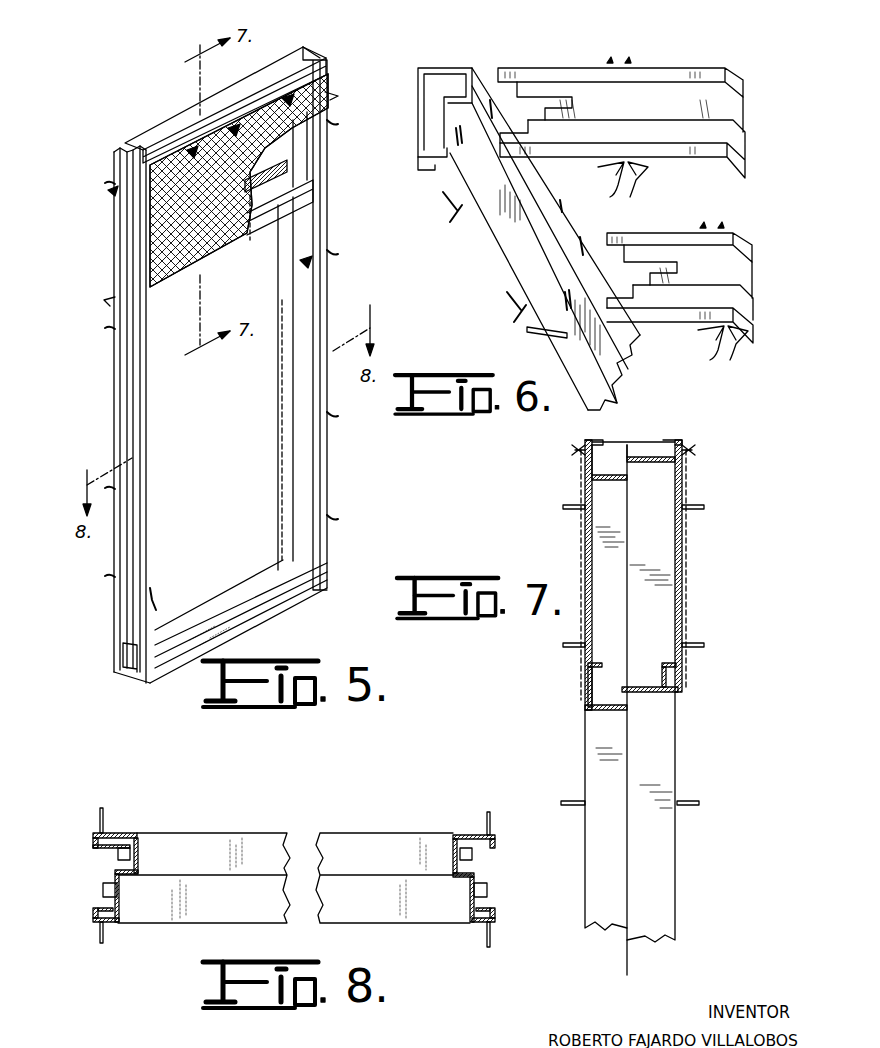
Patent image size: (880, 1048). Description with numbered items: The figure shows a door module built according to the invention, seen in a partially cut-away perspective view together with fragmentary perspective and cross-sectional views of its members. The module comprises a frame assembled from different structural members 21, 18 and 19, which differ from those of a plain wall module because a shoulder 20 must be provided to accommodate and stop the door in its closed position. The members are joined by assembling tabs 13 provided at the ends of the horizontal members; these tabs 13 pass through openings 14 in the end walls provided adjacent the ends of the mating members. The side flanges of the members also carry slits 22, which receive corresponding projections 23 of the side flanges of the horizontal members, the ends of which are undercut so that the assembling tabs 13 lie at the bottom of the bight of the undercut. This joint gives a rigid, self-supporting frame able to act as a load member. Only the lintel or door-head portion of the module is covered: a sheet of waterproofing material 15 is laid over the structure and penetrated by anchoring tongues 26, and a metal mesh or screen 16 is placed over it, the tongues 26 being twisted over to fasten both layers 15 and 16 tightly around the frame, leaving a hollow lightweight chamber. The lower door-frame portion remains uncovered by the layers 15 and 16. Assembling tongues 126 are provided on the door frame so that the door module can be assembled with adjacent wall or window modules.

In FIG. 6, the assembling tabs 13 is at (567, 108).
In FIG. 8, the assembling tabs 13 is at (104, 897).
In FIG. 6, the openings 14 is at (458, 135).
In FIG. 5, the sheet of waterproofing material 15 is at (242, 246).
In FIG. 5, the metal mesh or screen 16 is at (157, 230).
In FIG. 5, the structural member 18 is at (263, 222).
In FIG. 7, the structural member 18 is at (650, 692).
In FIG. 5, the structural member 19 is at (302, 62).
In FIG. 6, the structural member 19 is at (667, 100).
In FIG. 7, the structural member 19 is at (650, 458).
In FIG. 8, the structural member 19 is at (185, 847).
In FIG. 5, the shoulder 20 is at (300, 360).
In FIG. 5, the structural member 21 is at (157, 405).
In FIG. 6, the structural member 21 is at (485, 235).
In FIG. 7, the structural member 21 is at (655, 780).
In FIG. 8, the structural member 21 is at (113, 835).
In FIG. 6, the slits 22 is at (430, 172).
In FIG. 6, the projections 23 is at (530, 80).
In FIG. 5, the anchoring tongues 26 is at (233, 128).
In FIG. 6, the anchoring tongues 26 is at (628, 180).
In FIG. 7, the anchoring tongues 26 is at (692, 450).
In FIG. 5, the assembling tongues 126 is at (116, 300).
In FIG. 6, the assembling tongues 126 is at (515, 315).
In FIG. 7, the assembling tongues 126 is at (700, 646).
In FIG. 8, the assembling tongues 126 is at (97, 822).